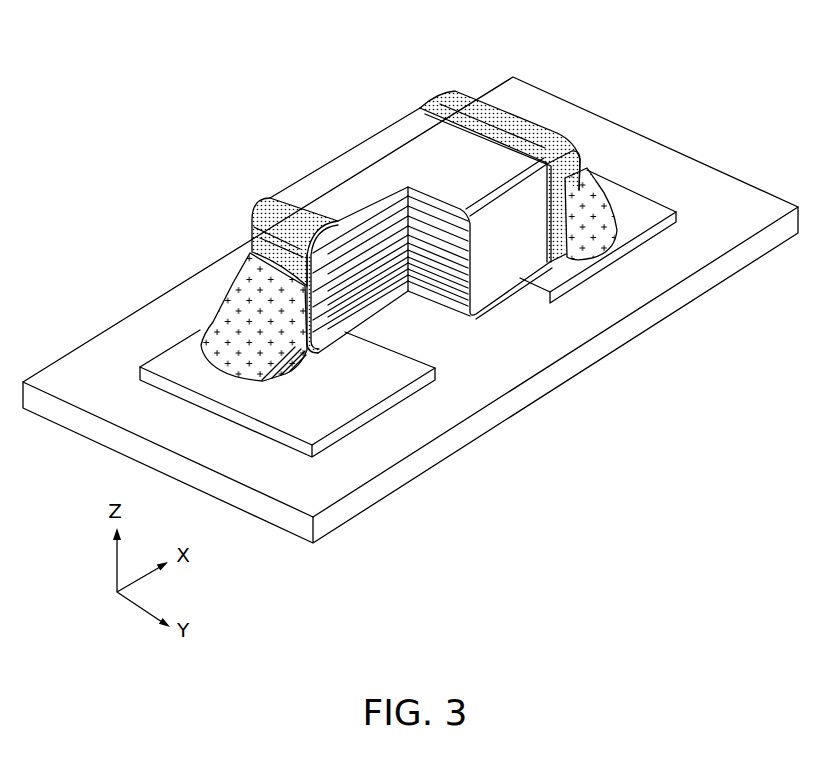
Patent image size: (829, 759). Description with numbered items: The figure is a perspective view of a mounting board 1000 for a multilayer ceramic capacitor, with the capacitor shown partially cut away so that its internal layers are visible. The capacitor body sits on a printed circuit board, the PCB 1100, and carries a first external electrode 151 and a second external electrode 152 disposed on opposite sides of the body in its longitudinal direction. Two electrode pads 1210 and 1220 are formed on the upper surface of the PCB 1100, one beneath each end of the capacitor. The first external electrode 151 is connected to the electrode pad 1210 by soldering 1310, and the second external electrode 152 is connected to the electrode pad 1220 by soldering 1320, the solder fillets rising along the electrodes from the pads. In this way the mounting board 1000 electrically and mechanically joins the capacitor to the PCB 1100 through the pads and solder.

The mounting board 1000 is at (606, 382).
The PCB 1100 is at (493, 415).
The electrode pad 1210 is at (180, 360).
The electrode pad 1220 is at (643, 207).
The soldering 1310 is at (235, 290).
The soldering 1320 is at (587, 171).
The first external electrode 151 is at (272, 208).
The second external electrode 152 is at (449, 102).